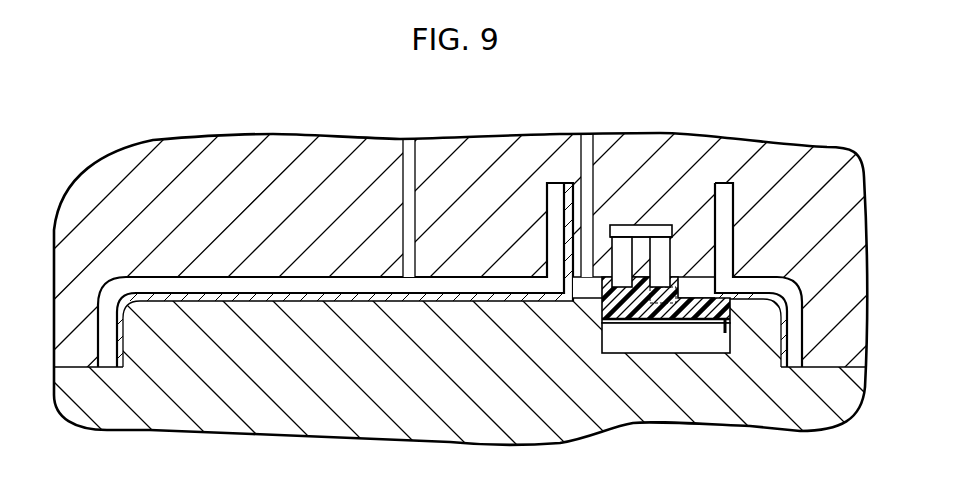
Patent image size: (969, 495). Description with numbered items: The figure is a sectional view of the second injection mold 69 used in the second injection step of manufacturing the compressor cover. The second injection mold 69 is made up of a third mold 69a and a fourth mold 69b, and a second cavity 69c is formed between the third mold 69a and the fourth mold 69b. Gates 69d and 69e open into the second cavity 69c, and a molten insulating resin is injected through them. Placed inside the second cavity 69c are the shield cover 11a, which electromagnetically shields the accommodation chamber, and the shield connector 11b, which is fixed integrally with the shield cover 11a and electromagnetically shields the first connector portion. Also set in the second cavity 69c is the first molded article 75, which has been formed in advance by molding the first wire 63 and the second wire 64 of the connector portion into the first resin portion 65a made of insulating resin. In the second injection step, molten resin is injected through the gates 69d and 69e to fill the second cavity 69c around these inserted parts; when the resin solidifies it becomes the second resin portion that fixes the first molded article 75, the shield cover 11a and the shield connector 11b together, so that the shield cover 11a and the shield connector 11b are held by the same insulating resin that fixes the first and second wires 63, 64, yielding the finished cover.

The second injection mold 69 is at (130, 149).
The third mold 69a is at (213, 160).
The fourth mold 69b is at (199, 400).
The second cavity 69c is at (358, 282).
The gate 69d is at (410, 166).
The gate 69e is at (589, 167).
The shield cover 11a is at (270, 298).
The shield connector 11b is at (714, 190).
The first wire 63 is at (623, 250).
The second wire 64 is at (663, 250).
The first resin portion 65a is at (634, 322).
The first molded article 75 is at (711, 332).